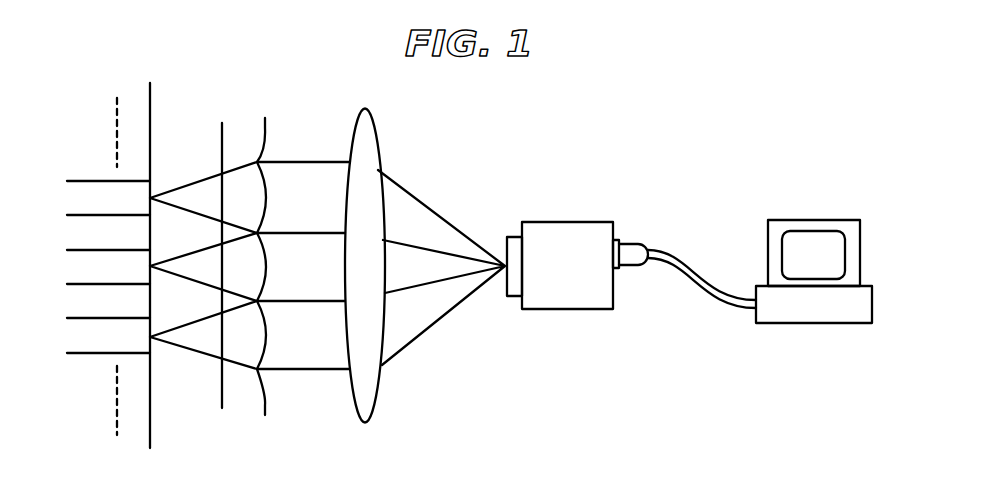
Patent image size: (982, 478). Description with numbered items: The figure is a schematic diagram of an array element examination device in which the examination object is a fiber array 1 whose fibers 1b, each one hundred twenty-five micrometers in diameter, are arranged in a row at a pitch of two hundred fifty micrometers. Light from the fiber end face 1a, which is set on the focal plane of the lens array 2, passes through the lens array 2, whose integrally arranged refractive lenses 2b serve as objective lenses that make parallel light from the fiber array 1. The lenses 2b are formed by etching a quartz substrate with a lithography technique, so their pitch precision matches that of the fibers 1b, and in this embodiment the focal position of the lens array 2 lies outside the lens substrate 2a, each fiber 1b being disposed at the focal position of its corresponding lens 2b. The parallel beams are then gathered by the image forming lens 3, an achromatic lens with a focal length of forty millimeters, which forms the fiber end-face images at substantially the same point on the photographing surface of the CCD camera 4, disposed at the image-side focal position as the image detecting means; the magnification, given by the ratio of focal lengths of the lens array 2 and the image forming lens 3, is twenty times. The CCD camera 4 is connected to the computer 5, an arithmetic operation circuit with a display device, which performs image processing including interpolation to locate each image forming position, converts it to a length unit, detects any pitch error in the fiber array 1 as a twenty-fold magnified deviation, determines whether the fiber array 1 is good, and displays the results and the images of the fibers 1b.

The fiber array 1 is at (151, 103).
The fiber end face 1a is at (152, 185).
The fibers 1b is at (107, 195).
The lens array 2 is at (241, 258).
The lens substrate 2a is at (222, 377).
The lenses 2b is at (257, 340).
The image forming lens 3 is at (378, 138).
The CCD camera 4 is at (560, 222).
The computer 5 is at (803, 220).